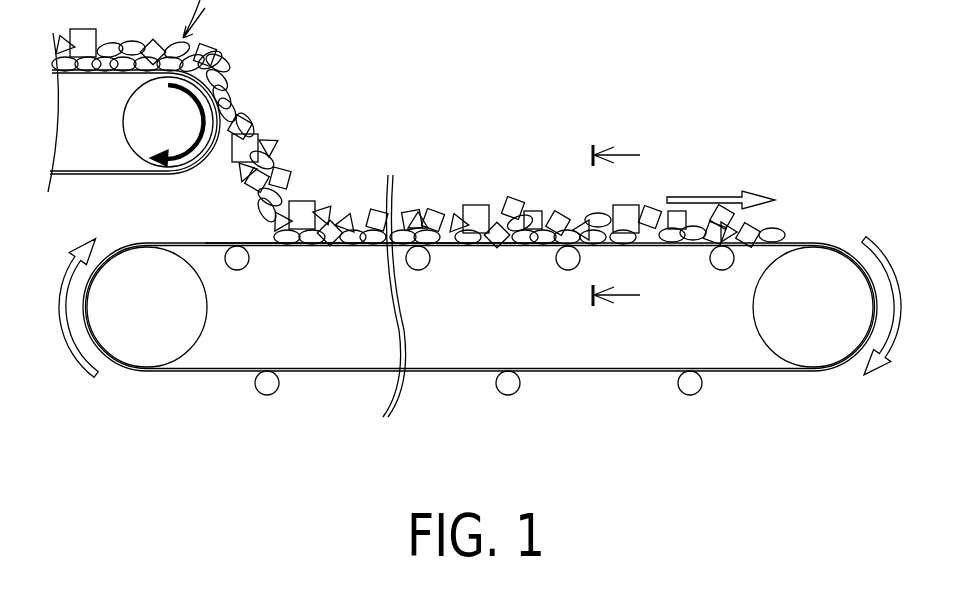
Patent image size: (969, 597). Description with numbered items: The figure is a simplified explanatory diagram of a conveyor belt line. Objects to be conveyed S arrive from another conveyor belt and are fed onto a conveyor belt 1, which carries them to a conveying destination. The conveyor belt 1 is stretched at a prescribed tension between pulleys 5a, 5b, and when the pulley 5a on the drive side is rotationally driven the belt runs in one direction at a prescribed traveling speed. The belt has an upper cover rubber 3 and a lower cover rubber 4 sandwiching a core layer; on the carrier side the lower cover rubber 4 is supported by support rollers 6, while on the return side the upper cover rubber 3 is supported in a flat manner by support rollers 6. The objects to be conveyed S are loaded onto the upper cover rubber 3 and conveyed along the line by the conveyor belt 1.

The conveyor belt 1 is at (480, 293).
The upper cover rubber 3 is at (205, 242).
The lower cover rubber 4 is at (500, 250).
The pulley 5a is at (817, 360).
The pulley 5b is at (143, 350).
The support rollers 6 is at (238, 264).
The objects to be conveyed S is at (253, 125).